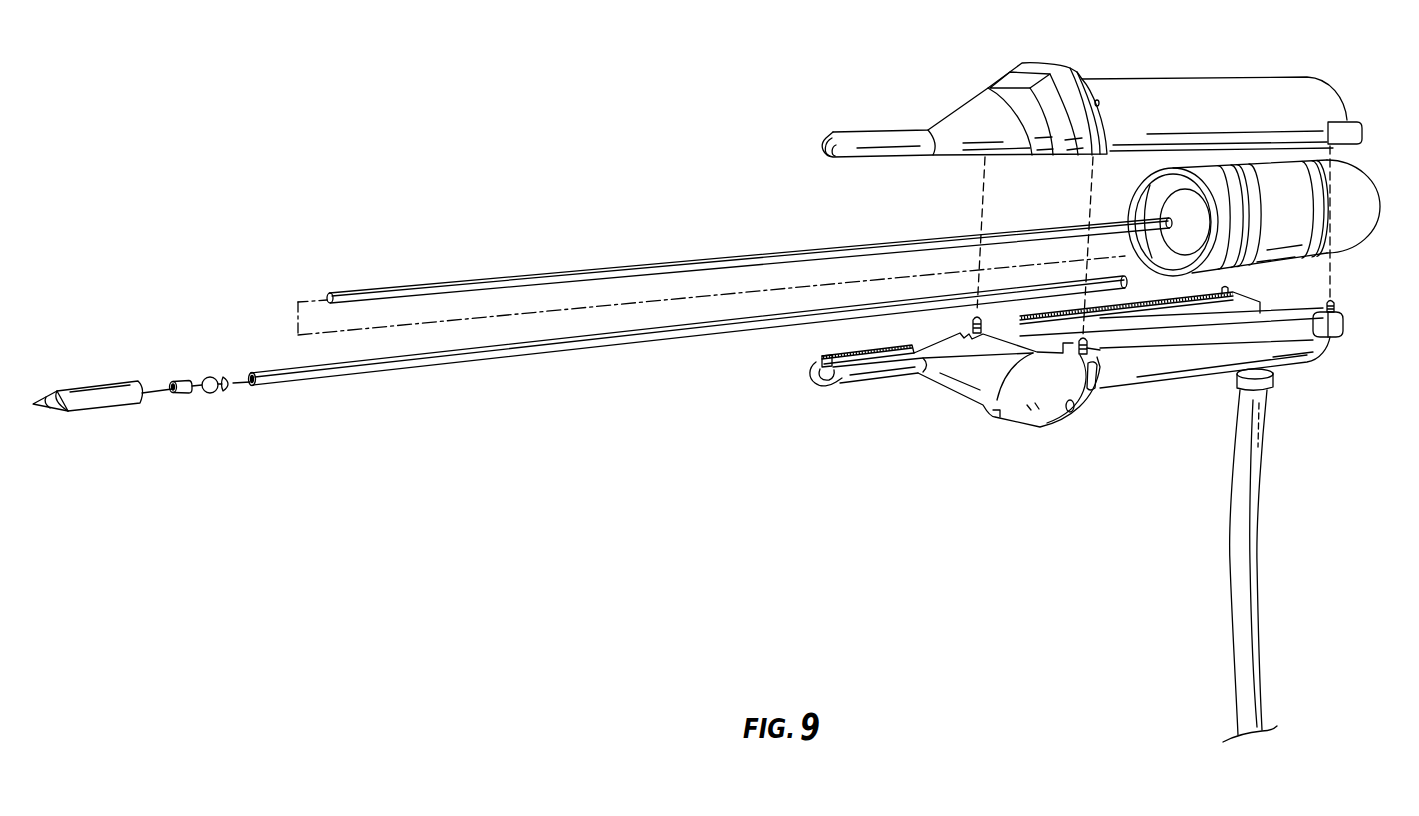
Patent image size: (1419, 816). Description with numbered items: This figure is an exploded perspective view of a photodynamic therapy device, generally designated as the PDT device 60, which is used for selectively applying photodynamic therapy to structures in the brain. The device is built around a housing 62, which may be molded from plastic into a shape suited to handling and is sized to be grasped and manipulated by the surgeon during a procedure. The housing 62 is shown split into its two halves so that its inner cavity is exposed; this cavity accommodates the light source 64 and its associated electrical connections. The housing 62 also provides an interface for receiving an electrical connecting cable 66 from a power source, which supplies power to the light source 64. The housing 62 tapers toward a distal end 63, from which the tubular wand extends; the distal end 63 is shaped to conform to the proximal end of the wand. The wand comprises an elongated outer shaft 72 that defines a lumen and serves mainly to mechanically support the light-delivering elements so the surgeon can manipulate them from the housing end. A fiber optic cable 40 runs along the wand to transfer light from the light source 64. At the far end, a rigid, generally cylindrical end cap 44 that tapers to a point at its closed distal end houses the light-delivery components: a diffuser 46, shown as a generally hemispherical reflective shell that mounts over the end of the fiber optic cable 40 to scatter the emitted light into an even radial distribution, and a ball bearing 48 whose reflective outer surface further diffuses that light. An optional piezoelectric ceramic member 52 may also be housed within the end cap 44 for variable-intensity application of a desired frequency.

The fiber optic cable 40 is at (485, 282).
The end cap 44 is at (103, 390).
The diffuser 46 is at (230, 388).
The ball bearing 48 is at (208, 380).
The piezoelectric ceramic member 52 is at (178, 384).
The PDT device 60 is at (643, 204).
The housing 62 is at (1237, 90).
The distal end of the housing 63 is at (833, 137).
The light source 64 is at (1355, 205).
The electrical connecting cable 66 is at (1237, 565).
The outer shaft 72 is at (362, 375).